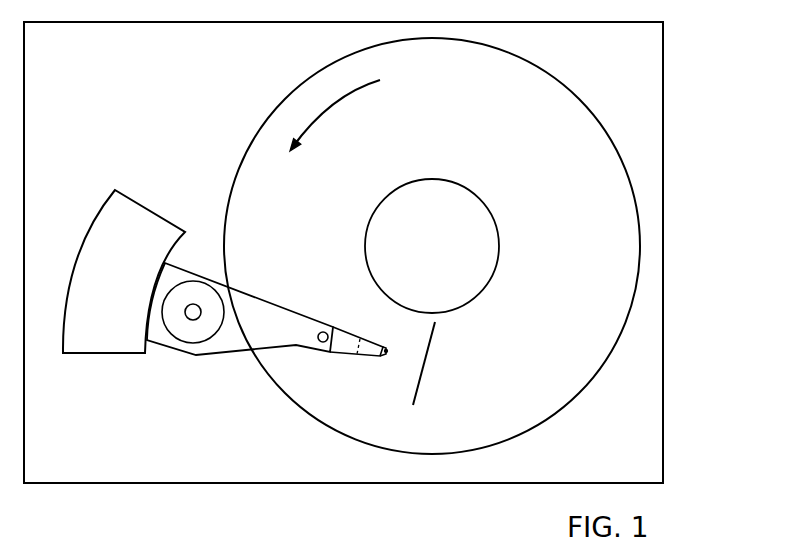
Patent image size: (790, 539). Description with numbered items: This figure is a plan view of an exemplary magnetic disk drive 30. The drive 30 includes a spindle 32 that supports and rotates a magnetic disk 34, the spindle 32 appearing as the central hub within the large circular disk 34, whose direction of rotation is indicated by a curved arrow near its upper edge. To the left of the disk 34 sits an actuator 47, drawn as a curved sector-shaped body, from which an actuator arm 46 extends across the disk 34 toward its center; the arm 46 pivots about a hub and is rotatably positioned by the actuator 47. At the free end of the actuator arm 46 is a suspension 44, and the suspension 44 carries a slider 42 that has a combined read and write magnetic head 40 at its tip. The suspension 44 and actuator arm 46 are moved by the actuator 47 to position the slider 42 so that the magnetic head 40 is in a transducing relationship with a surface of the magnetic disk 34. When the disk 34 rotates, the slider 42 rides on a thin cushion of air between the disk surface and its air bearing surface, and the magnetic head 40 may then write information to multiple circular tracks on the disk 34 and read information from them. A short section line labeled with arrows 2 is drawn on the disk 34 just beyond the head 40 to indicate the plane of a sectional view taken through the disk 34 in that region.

The magnetic disk drive 30 is at (682, 60).
The spindle 32 is at (468, 190).
The magnetic disk 34 is at (582, 267).
The magnetic head 40 is at (388, 357).
The slider 42 is at (385, 346).
The suspension 44 is at (345, 356).
The actuator arm 46 is at (284, 310).
The actuator 47 is at (157, 220).
The section line 2- 2 is at (445, 330).